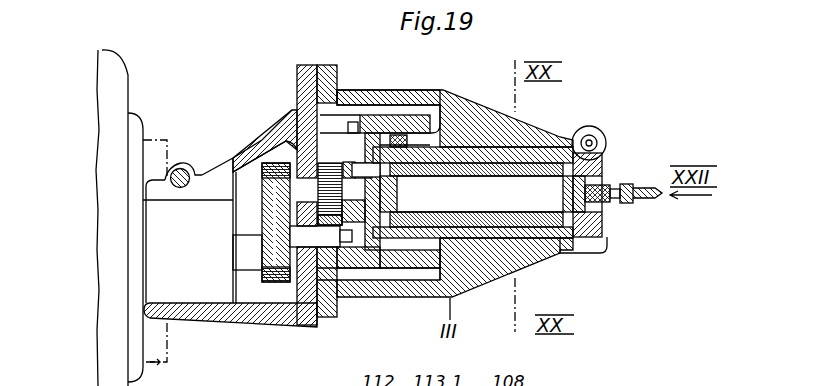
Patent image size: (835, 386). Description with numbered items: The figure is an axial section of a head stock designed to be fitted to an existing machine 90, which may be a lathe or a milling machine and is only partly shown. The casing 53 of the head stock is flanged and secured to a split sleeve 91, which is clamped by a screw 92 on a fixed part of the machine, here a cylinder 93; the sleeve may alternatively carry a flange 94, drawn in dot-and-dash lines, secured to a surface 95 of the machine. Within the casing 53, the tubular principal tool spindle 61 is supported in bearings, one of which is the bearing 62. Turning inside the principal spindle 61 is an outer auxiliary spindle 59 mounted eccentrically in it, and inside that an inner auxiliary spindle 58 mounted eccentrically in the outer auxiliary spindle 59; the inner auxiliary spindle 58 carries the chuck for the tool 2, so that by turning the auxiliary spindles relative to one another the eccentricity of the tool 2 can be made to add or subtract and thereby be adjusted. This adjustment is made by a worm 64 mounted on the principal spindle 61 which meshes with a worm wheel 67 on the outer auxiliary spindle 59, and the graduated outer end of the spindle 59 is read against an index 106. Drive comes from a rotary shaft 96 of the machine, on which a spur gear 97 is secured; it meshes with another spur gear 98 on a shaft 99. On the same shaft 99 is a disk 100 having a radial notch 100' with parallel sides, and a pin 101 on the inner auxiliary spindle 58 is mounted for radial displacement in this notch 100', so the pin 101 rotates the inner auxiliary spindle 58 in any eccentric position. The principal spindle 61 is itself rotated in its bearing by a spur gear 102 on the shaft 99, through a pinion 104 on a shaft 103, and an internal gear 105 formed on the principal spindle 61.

The tool 2 is at (647, 200).
The head stock body 53 is at (445, 90).
The inner auxiliary spindle 58 is at (611, 175).
The outer auxiliary spindle 59 is at (602, 222).
The principal tool spindle 61 is at (538, 232).
The bearing 62 is at (480, 130).
The worm 64 is at (598, 131).
The worm wheel 67 is at (603, 159).
The existing machine 90 is at (139, 133).
The split sleeve 91 is at (193, 314).
The screw 92 is at (184, 168).
The cylinder 93 is at (214, 289).
The flange 94 is at (164, 358).
The surface of the machine 95 is at (142, 337).
The rotary shaft 96 is at (247, 262).
The spur gear 97 is at (280, 283).
The spur gear 98 is at (275, 173).
The shaft 99 is at (308, 187).
The disk 100 is at (473, 192).
The radial notch 100' is at (380, 153).
The pin 101 is at (386, 92).
The spur gear 102 is at (346, 166).
The shaft 103 is at (310, 324).
The pinion 104 is at (335, 259).
The internal gear 105 is at (383, 293).
The index 106 is at (596, 254).